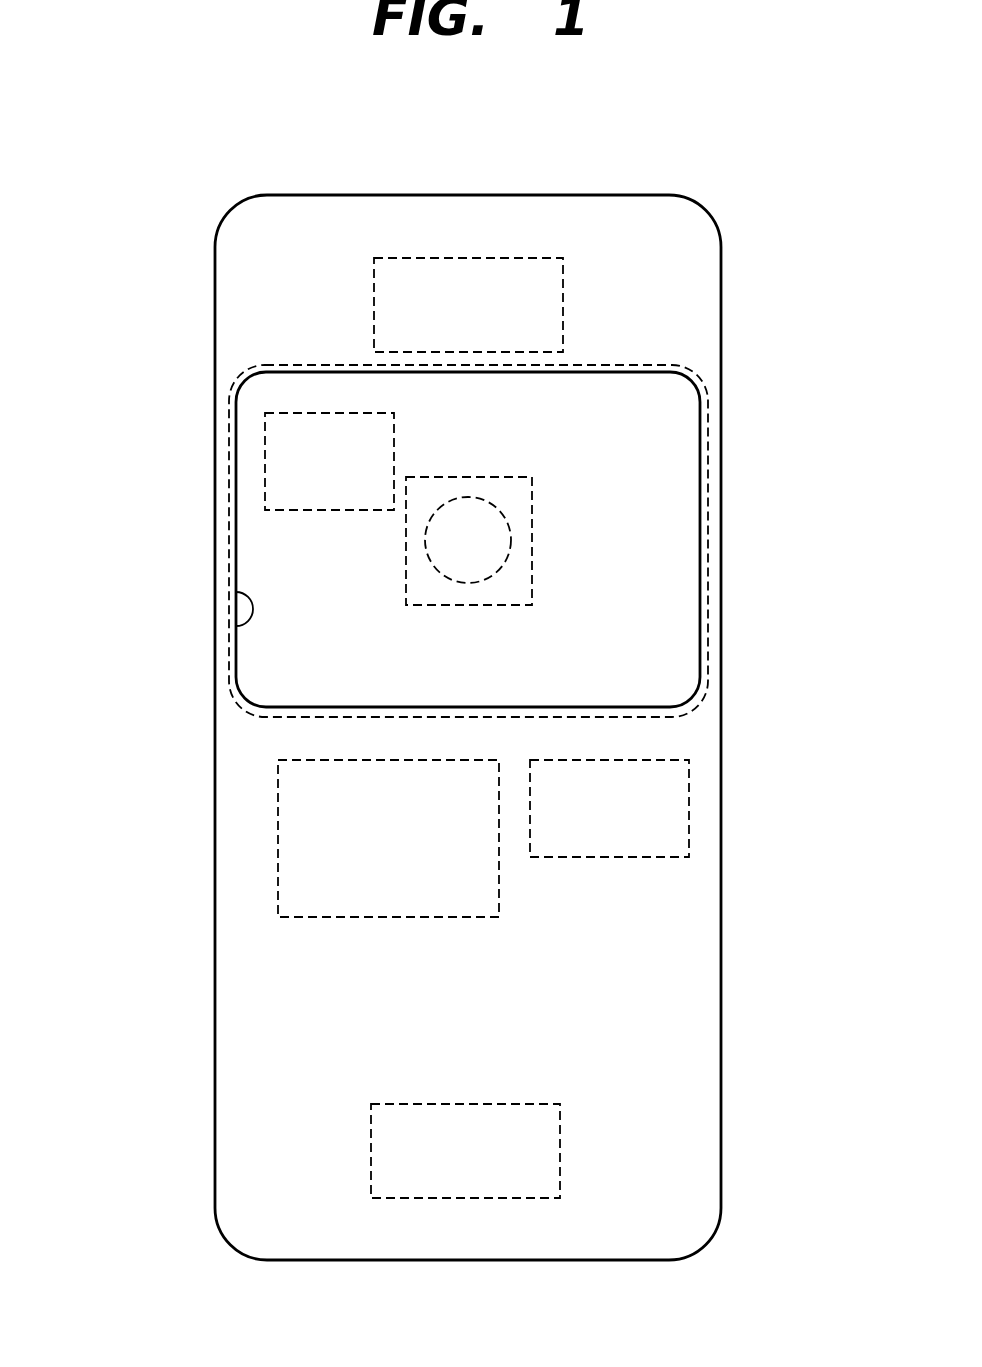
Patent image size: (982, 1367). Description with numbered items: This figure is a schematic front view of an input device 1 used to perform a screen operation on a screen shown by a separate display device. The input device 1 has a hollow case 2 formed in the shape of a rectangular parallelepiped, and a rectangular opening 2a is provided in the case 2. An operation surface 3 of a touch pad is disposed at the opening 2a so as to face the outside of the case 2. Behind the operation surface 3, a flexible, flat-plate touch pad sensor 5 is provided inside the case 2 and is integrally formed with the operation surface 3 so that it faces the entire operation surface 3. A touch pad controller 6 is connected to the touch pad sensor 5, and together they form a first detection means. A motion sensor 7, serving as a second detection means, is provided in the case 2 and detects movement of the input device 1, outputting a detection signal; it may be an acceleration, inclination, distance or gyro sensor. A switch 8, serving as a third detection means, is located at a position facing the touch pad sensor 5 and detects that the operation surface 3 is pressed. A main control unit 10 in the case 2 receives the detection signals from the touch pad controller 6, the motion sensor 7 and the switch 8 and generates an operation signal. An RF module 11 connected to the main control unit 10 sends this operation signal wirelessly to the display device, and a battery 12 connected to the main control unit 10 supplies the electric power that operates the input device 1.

The input device 1 is at (172, 238).
The case 2 is at (333, 194).
The opening 2a is at (254, 623).
The operation surface 3 is at (600, 537).
The touch pad sensor 5 is at (708, 566).
The touch pad controller 6 is at (346, 479).
The motion sensor 7 is at (484, 320).
The switch 8 is at (405, 556).
The main control unit 10 is at (413, 854).
The RF module 11 is at (632, 824).
The battery 12 is at (491, 1169).